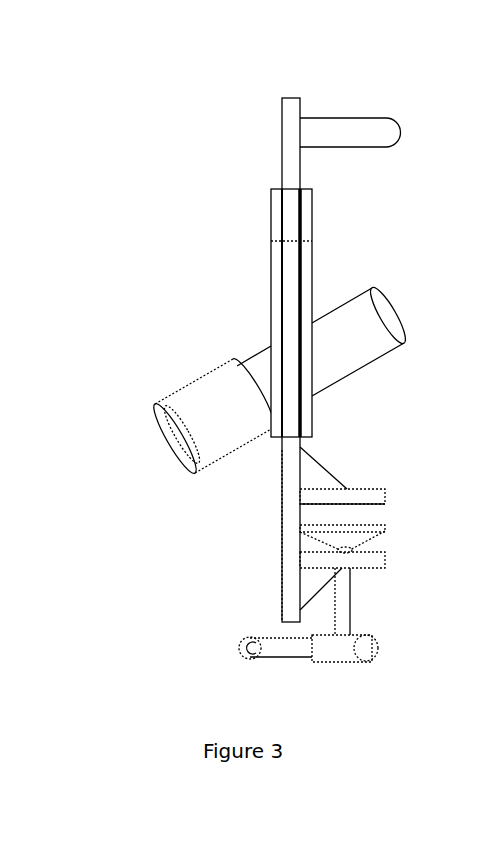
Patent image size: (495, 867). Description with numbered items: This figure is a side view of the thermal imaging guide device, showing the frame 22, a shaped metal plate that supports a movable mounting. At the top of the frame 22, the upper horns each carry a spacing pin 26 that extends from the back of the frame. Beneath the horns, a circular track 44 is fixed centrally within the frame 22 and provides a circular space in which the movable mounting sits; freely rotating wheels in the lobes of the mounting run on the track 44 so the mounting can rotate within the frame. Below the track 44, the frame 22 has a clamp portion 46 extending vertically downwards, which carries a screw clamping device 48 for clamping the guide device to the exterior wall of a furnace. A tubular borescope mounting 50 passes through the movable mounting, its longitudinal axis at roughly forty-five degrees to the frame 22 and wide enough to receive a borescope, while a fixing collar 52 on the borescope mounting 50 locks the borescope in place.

The frame 22 is at (285, 150).
The spacing pin 26 is at (353, 122).
The circular track 44 is at (308, 224).
The clamp portion 46 is at (282, 528).
The screw clamping device 48 is at (343, 610).
The borescope mounting 50 is at (260, 360).
The fixing collar 52 is at (168, 416).